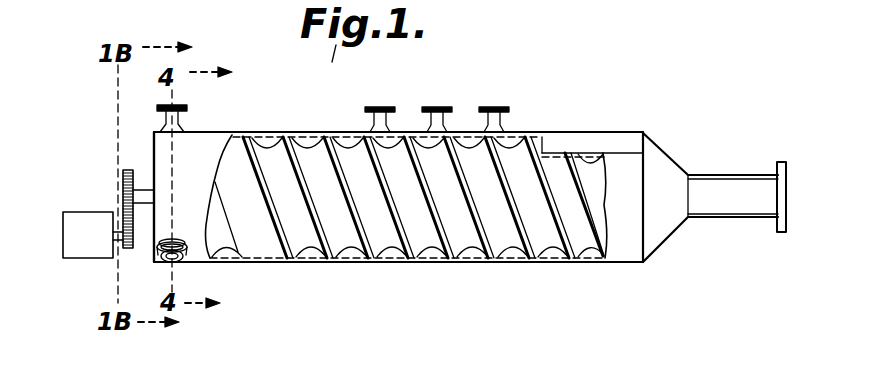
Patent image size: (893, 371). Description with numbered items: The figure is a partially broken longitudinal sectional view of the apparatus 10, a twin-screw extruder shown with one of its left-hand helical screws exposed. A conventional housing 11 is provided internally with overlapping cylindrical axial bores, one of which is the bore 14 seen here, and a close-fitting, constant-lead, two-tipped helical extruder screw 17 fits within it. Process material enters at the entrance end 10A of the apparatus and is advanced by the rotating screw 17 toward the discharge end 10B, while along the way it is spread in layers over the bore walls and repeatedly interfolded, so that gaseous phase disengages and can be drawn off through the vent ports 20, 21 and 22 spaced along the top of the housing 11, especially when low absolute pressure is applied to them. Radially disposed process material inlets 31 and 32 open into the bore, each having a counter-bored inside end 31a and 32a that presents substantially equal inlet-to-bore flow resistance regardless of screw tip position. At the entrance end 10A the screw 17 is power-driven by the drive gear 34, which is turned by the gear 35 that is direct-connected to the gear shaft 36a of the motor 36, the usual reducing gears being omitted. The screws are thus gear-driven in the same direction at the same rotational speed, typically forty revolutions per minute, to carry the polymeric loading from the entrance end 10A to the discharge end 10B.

The apparatus 10 is at (609, 130).
The entrance end 10A is at (153, 147).
The discharge end 10B is at (661, 245).
The housing 11 is at (306, 137).
The cylindrical axial bore 14 is at (334, 140).
The helical extruder screw 17 is at (327, 222).
The vent port 20 is at (390, 113).
The vent port 21 is at (447, 113).
The vent port 22 is at (487, 122).
The process material inlet 31 is at (178, 263).
The counter-bore 31a is at (183, 240).
The process material inlet 32 is at (184, 119).
The counter-bore 32a is at (155, 130).
The drive gear 34 is at (123, 183).
The gear 35 is at (128, 248).
The motor 36 is at (90, 247).
The gear shaft 36a is at (117, 236).